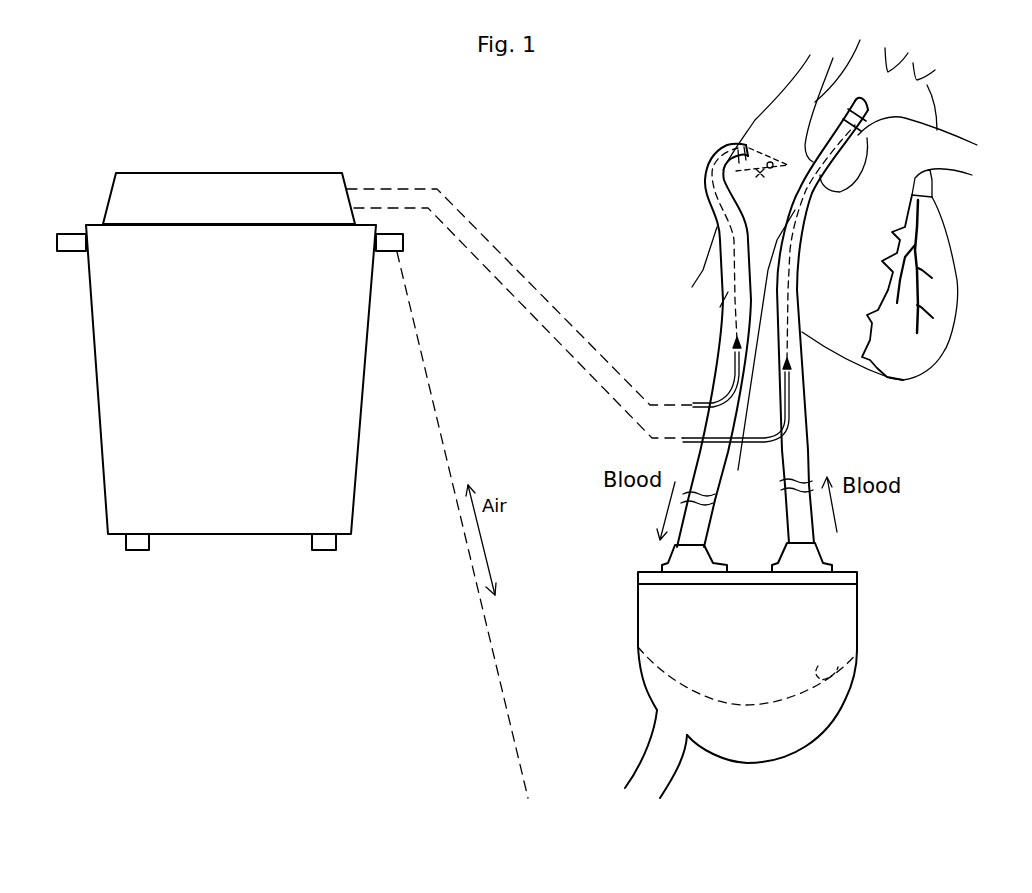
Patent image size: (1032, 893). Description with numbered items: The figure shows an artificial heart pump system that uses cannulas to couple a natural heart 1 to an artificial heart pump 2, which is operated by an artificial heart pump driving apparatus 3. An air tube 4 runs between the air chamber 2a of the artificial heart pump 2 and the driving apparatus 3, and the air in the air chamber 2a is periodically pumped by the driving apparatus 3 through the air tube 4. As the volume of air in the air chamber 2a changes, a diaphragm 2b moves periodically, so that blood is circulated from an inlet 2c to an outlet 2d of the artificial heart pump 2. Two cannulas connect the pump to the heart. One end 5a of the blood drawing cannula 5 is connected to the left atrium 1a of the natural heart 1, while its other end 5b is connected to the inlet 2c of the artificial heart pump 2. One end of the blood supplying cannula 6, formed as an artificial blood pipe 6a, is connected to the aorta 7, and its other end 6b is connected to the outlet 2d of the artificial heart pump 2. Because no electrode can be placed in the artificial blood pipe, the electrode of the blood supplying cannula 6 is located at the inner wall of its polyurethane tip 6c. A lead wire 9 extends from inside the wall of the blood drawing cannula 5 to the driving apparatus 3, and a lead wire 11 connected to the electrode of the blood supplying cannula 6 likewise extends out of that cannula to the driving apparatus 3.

The natural heart 1 is at (942, 248).
The left atrium 1a is at (757, 123).
The artificial heart pump 2 is at (855, 608).
The air chamber 2a is at (810, 732).
The diaphragm 2b is at (857, 667).
The inlet 2c is at (663, 568).
The outlet 2d is at (837, 568).
The artificial heart pump driving apparatus 3 is at (247, 179).
The air tube 4 is at (673, 765).
The blood drawing cannula 5 is at (702, 453).
The one end of blood drawing cannula 5a is at (758, 173).
The other end of blood drawing cannula 5b is at (703, 532).
The blood supplying cannula 6 is at (802, 443).
The artificial blood pipe 6a is at (870, 105).
The other end of blood supplying cannula 6b is at (790, 510).
The tip 6c is at (858, 136).
The aorta 7 is at (856, 78).
The lead wire 9 is at (700, 404).
The lead wire 11 is at (792, 395).